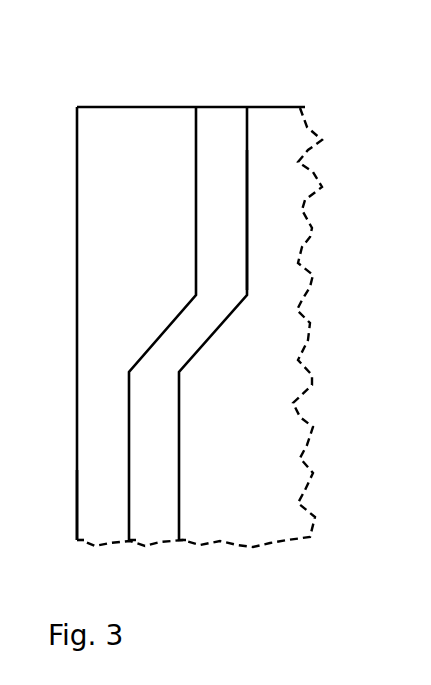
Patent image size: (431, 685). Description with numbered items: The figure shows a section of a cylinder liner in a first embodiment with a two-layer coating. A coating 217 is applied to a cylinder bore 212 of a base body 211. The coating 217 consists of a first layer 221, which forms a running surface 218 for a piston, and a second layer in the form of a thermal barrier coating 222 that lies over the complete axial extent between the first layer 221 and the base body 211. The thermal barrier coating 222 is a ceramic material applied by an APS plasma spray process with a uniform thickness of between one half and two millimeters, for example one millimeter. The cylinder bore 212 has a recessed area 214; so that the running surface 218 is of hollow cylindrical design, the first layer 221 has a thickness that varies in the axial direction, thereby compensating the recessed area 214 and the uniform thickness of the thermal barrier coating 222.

The base body 211 is at (278, 128).
The cylinder bore 212 is at (35, 150).
The recessed area 214 is at (237, 203).
The coating 217 is at (205, 73).
The running surface 218 is at (77, 482).
The first layer 221 is at (120, 128).
The thermal barrier coating 222 is at (223, 118).